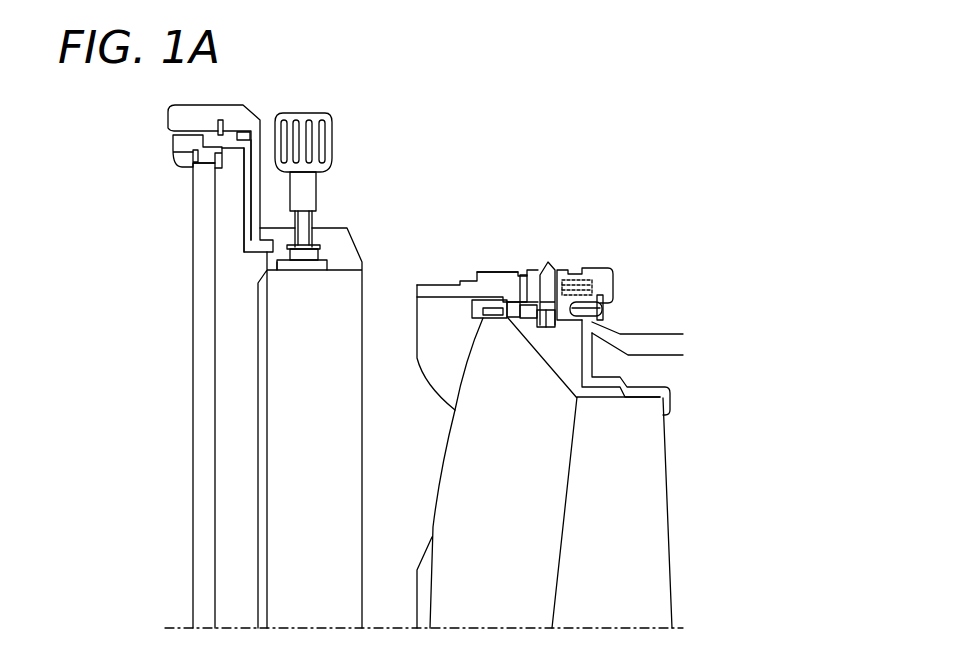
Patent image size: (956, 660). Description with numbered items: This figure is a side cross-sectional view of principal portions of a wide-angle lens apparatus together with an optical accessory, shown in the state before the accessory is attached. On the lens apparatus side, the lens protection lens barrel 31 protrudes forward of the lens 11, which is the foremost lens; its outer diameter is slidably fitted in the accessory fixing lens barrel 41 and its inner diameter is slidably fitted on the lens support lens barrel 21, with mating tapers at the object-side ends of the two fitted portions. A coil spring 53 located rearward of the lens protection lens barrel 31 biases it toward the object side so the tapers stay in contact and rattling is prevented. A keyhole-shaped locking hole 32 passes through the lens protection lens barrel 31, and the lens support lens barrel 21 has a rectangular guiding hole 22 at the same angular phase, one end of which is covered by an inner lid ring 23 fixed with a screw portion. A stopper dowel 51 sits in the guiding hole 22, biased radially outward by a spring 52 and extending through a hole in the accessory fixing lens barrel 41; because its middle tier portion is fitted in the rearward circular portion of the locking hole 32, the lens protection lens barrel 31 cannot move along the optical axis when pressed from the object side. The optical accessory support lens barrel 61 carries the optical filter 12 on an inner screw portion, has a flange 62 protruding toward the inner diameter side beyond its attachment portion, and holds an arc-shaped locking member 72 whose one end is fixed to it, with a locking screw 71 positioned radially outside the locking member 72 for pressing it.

The lens 11 is at (442, 494).
The optical filter 12 is at (195, 208).
The lens support lens barrel 21 is at (500, 320).
The guiding hole 22 is at (566, 318).
The inner lid ring 23 is at (548, 328).
The lens protection lens barrel 31 is at (438, 285).
The locking hole 32 is at (527, 275).
The accessory fixing lens barrel 41 is at (488, 272).
The stopper dowel 51 is at (549, 262).
The spring 52 is at (528, 318).
The coil spring 53 is at (585, 282).
The optical accessory support lens barrel 61 is at (168, 118).
The flange 62 is at (264, 275).
The locking screw 71 is at (312, 113).
The arc-shaped locking member 72 is at (303, 271).